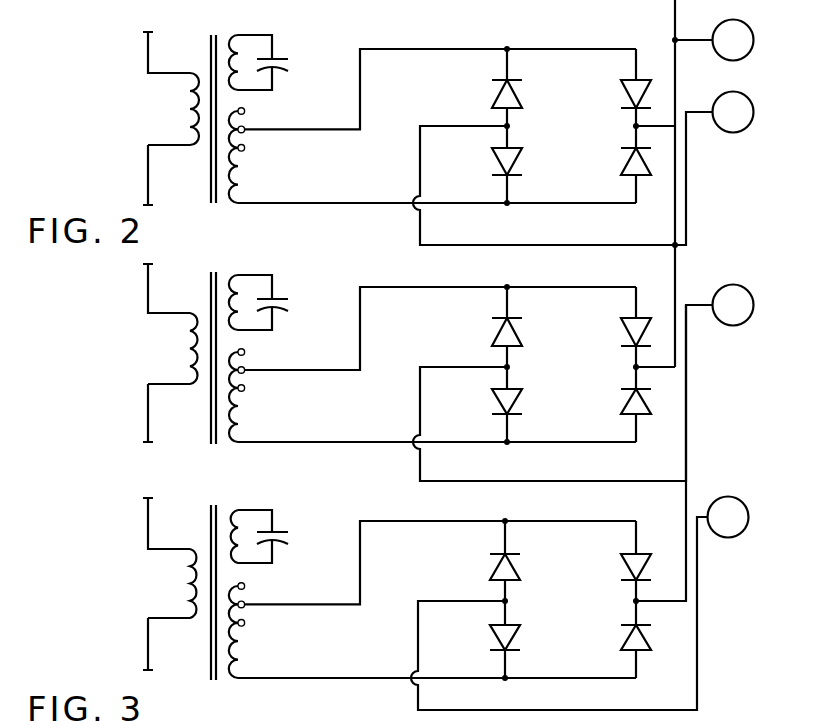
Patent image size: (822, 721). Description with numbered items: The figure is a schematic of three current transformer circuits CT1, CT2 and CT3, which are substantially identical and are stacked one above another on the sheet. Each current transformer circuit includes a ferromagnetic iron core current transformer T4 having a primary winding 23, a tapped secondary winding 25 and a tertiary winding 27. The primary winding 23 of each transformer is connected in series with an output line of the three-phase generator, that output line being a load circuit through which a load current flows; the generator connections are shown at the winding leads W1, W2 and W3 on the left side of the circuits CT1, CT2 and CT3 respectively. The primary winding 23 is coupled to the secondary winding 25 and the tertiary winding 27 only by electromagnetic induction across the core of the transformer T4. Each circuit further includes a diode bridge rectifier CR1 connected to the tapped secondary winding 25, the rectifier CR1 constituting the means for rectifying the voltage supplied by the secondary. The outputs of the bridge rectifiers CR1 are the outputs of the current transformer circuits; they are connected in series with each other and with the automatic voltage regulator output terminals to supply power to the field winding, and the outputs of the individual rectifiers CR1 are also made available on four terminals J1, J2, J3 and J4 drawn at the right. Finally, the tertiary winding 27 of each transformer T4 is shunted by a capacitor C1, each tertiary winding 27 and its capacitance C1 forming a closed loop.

The primary winding 23 is at (192, 116).
The tapped secondary winding 25 is at (240, 188).
The tertiary winding 27 is at (229, 34).
The current transformer T4 is at (209, 43).
The capacitor C1 is at (278, 60).
The diode bridge rectifier CR1 is at (538, 32).
The winding lead 1 W1 is at (148, 48).
The winding lead 2 W2 is at (148, 288).
The winding lead 3 W3 is at (148, 634).
The current transformer circuit CT1 is at (150, 106).
The current transformer circuit CT2 is at (152, 352).
The current transformer circuit CT3 is at (144, 572).
The terminal J1 is at (580, 604).
The terminal J2 is at (583, 383).
The terminal J3 is at (583, 170).
The terminal J4 is at (695, 183).